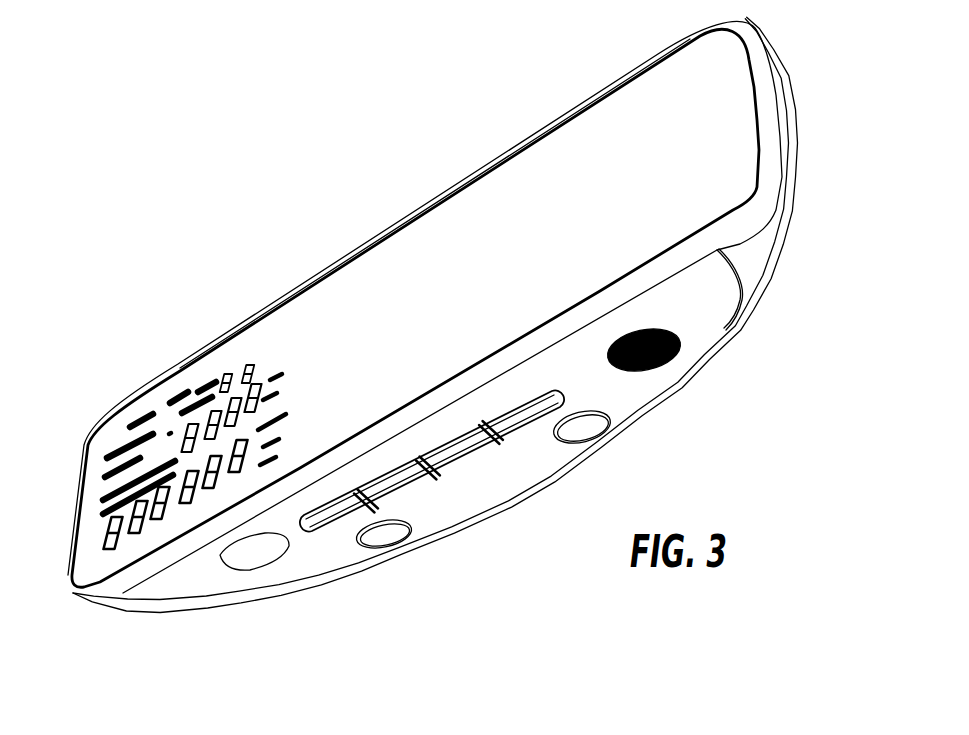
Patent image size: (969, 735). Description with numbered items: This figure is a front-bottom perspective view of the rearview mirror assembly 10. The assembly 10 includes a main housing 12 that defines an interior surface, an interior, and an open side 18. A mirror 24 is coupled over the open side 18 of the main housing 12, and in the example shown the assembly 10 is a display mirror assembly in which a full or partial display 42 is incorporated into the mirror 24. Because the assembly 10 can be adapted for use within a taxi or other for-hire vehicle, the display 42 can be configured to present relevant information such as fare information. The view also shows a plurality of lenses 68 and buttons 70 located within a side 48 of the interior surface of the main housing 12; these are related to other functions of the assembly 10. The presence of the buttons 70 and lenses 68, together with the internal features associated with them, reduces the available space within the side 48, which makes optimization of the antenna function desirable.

The rearview mirror assembly 10 is at (462, 324).
The main housing 12 is at (752, 321).
The open side 18 is at (782, 108).
The mirror 24 is at (484, 187).
The display 42 is at (167, 393).
The side 48 is at (490, 477).
The lenses 68 is at (373, 537).
The buttons 70 is at (521, 413).